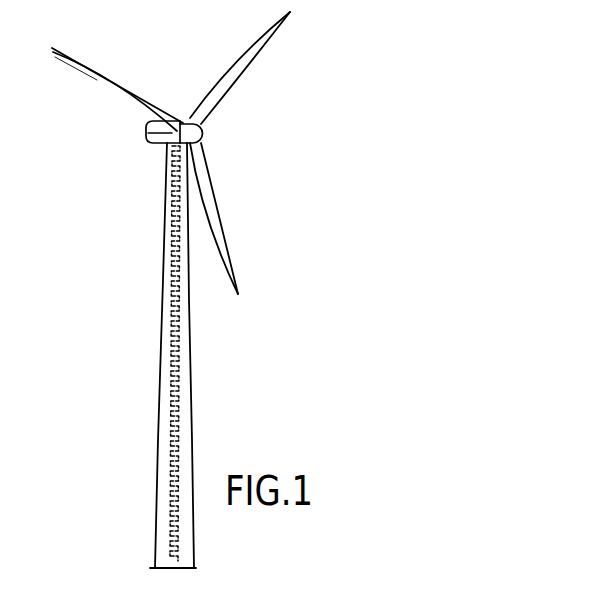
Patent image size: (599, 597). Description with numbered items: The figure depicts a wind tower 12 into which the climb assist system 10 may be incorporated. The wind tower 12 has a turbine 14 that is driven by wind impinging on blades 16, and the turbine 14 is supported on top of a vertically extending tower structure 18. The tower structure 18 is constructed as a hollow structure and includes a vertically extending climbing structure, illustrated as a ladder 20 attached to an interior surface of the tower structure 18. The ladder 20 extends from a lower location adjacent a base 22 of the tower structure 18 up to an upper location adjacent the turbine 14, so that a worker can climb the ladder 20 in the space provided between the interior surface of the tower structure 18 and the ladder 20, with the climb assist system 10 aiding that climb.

The climb assist system 10 is at (434, 593).
The wind tower 12 is at (131, 122).
The turbine 14 is at (158, 146).
The blades 16 is at (128, 79).
The tower structure 18 is at (164, 294).
The ladder 20 is at (157, 391).
The base 22 is at (154, 568).